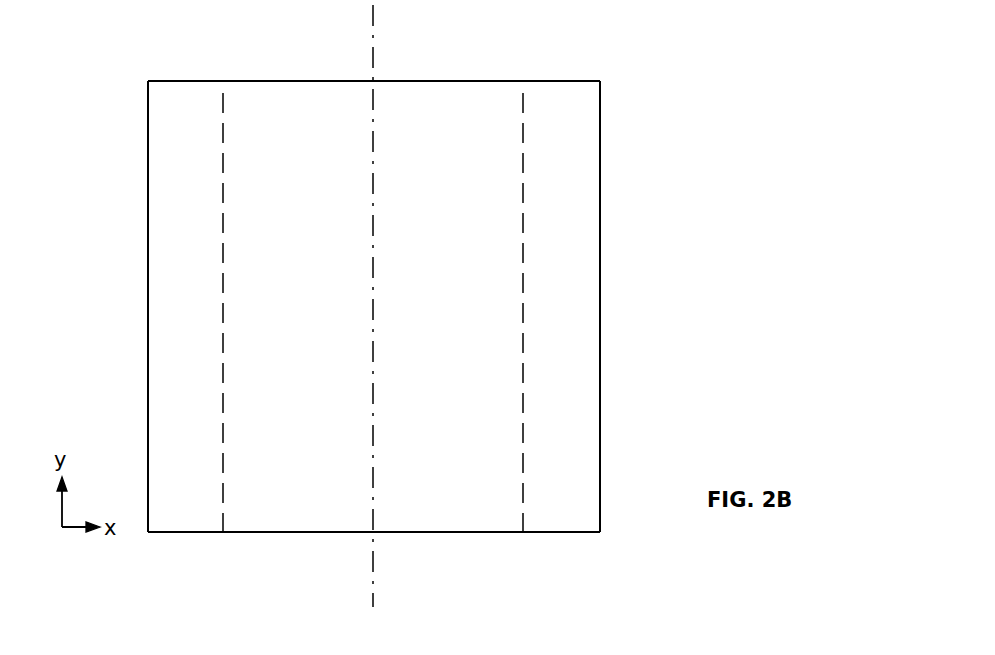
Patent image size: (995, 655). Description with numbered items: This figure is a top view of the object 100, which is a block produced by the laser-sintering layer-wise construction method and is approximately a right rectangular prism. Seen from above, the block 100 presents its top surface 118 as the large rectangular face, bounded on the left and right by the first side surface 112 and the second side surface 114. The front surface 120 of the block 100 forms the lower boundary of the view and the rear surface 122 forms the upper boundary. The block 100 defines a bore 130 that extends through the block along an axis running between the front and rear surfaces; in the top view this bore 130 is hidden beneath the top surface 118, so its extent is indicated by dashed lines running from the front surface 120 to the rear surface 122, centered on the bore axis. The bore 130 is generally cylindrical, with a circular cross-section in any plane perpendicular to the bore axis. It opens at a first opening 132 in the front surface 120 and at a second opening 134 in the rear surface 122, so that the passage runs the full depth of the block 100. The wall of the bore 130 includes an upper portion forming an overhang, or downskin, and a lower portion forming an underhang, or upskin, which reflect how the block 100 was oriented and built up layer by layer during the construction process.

The block 100 is at (580, 62).
The first side surface 112 is at (148, 293).
The second side surface 114 is at (600, 290).
The top surface 118 is at (163, 203).
The front surface 120 is at (560, 532).
The rear surface 122 is at (190, 81).
The bore 130 is at (448, 227).
The first opening 132 is at (450, 532).
The second opening 134 is at (298, 81).